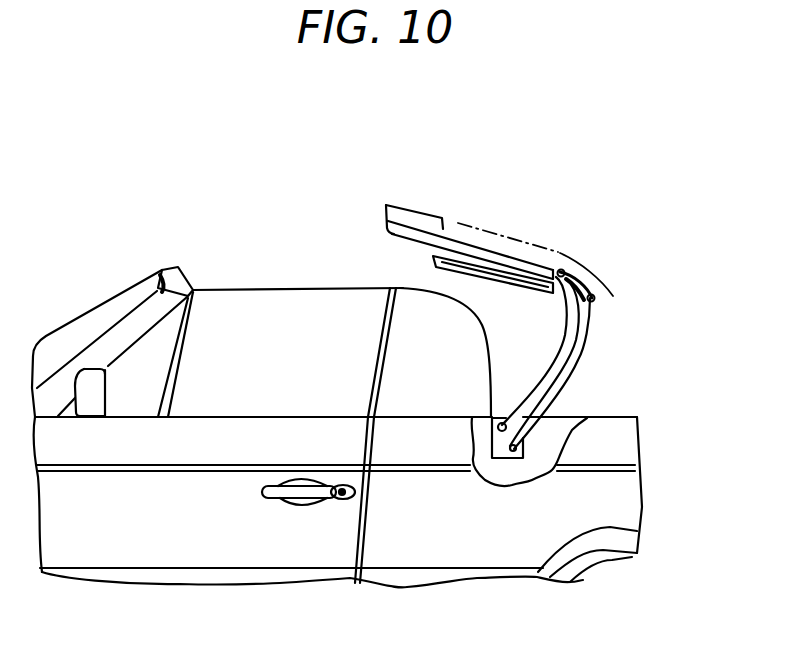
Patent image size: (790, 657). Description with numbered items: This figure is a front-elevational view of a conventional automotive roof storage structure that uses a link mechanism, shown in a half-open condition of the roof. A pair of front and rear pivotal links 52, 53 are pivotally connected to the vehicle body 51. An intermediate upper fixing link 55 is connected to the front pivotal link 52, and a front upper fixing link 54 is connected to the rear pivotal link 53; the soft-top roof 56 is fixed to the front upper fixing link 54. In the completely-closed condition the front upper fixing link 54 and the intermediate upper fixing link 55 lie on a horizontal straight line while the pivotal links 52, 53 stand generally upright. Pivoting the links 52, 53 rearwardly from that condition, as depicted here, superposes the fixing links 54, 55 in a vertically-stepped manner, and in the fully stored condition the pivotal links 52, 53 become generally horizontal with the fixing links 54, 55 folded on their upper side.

The vehicle body 51 is at (613, 416).
The front pivotal link 52 is at (553, 373).
The rear pivotal link 53 is at (588, 340).
The front upper fixing link 54 is at (452, 240).
The intermediate upper fixing link 55 is at (494, 281).
The soft-top roof 56 is at (574, 250).